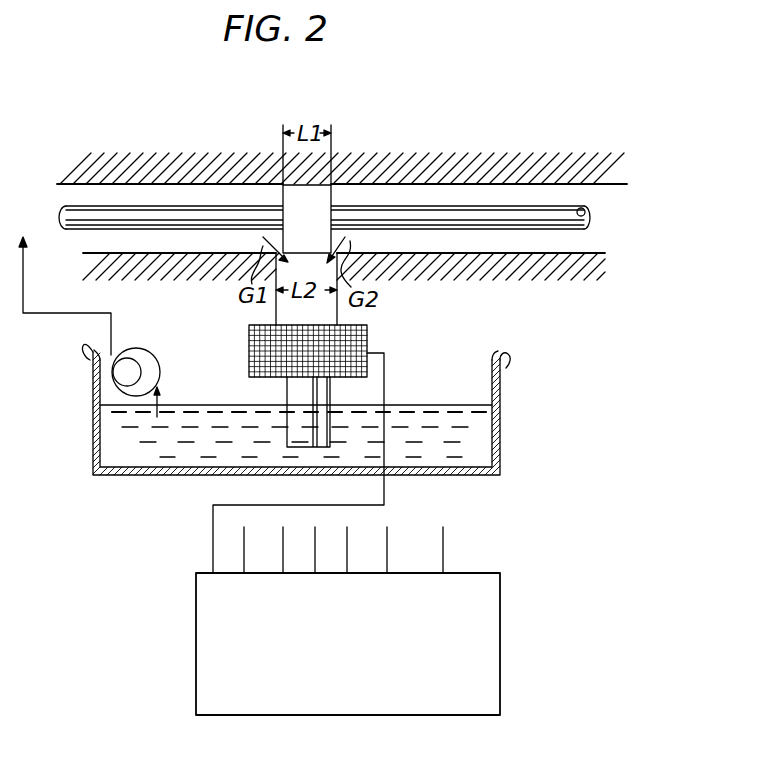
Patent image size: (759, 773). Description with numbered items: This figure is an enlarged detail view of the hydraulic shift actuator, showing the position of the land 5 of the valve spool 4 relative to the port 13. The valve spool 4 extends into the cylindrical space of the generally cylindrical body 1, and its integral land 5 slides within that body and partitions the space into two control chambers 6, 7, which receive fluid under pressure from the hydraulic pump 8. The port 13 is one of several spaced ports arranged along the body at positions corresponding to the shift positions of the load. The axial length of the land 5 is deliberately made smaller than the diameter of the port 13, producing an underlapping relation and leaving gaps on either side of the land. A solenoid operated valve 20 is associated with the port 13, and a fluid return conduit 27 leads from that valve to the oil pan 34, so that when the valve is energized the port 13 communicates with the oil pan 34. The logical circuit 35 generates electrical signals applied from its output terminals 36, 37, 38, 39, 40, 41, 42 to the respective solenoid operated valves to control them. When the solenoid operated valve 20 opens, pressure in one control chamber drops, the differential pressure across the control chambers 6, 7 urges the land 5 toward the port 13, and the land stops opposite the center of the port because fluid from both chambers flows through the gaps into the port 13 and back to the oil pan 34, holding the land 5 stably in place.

The cylindrical body 1 is at (476, 185).
The valve spool 4 is at (512, 213).
The land 5 is at (326, 199).
The control chamber 6 is at (174, 192).
The control chamber 7 is at (426, 190).
The hydraulic pump 8 is at (149, 365).
The port 13 is at (360, 255).
The solenoid operated valve 20 is at (370, 345).
The fluid return conduit 27 is at (287, 395).
The oil pan 34 is at (500, 372).
The logical circuit 35 is at (501, 639).
The output terminal 36 is at (212, 568).
The output terminal 37 is at (247, 568).
The output terminal 38 is at (285, 568).
The output terminal 39 is at (317, 568).
The output terminal 40 is at (349, 568).
The output terminal 41 is at (389, 568).
The output terminal 42 is at (446, 568).